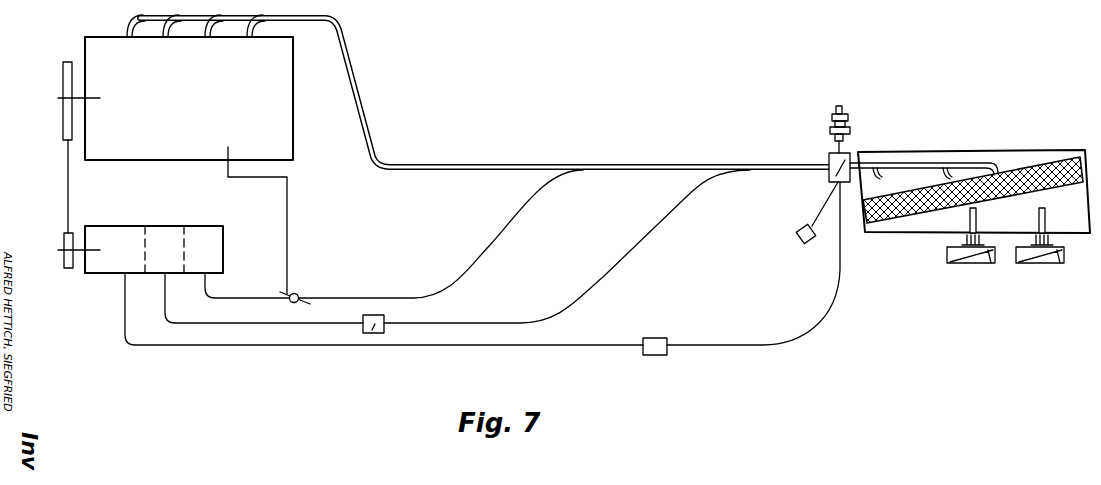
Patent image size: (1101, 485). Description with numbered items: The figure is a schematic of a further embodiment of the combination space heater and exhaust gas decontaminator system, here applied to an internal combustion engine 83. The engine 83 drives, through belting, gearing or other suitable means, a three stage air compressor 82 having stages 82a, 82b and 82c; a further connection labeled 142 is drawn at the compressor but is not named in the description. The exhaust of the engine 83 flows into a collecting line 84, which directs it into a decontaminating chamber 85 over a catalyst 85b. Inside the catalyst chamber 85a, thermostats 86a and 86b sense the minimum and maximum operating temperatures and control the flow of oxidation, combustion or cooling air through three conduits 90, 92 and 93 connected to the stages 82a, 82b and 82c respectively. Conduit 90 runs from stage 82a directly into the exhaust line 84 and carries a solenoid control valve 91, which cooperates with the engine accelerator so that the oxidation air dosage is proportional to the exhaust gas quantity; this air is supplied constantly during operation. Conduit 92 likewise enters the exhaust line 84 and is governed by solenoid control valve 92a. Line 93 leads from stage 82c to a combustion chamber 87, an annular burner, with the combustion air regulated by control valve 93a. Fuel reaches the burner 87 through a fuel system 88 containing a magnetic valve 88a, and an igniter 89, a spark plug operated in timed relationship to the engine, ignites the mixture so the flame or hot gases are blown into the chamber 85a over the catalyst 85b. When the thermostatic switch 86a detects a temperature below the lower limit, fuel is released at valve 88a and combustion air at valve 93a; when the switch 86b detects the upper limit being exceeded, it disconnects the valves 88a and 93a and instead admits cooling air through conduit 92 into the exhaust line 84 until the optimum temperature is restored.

The supply line / connection 142 is at (67, 173).
The three stage air compressor 82 is at (97, 213).
The compressor stage 82a is at (211, 238).
The compressor stage 82b is at (168, 238).
The compressor stage 82c is at (118, 238).
The internal combustion engine 83 is at (278, 116).
The collecting line 84 is at (350, 61).
The decontaminating chamber 85 is at (976, 147).
The catalyst chamber 85a is at (926, 162).
The catalyst 85b is at (1042, 160).
The thermostatic switch 86a is at (975, 264).
The thermostat switch 86b is at (1045, 264).
The combustion chamber 87 is at (845, 158).
The fuel system 88 is at (800, 231).
The magnetic valve 88a is at (810, 247).
The igniter 89 is at (846, 110).
The conduit 90 is at (482, 251).
The solenoid control valve 91 is at (300, 296).
The conduit 92 is at (604, 279).
The solenoid control valve 92a is at (372, 335).
The line 93 is at (602, 347).
The control valve 93a is at (655, 357).